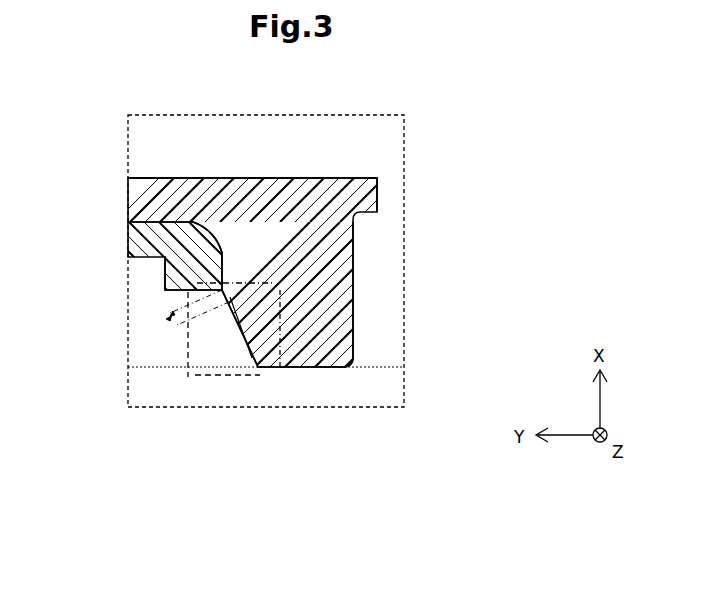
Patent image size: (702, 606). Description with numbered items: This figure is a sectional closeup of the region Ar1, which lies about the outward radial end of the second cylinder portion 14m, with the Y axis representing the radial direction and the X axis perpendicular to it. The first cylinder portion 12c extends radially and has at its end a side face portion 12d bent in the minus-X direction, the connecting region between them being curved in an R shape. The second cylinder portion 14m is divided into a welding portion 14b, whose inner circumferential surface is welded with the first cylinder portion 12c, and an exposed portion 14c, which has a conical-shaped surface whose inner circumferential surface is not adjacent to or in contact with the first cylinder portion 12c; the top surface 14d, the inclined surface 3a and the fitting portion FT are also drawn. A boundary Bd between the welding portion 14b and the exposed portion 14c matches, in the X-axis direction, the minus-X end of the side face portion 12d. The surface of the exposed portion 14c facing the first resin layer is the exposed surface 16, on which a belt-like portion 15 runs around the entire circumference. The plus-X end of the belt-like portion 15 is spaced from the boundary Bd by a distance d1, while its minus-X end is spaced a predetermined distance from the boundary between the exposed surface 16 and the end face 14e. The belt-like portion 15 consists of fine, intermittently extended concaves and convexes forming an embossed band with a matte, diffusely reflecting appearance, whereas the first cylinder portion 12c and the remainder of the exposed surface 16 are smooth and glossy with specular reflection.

The region Ar1 is at (405, 160).
The second cylinder portion 14m is at (303, 273).
The welding portion 14b is at (176, 190).
The exposed portion 14c is at (308, 318).
The upper surface 14d is at (255, 185).
The end face 14e is at (310, 367).
The inclined surface 3a is at (248, 350).
The belt-like portion 15 is at (225, 300).
The exposed surface 16 is at (223, 297).
The first cylinder portion 12c is at (130, 245).
The side face portion 12d is at (165, 276).
The distance d1 is at (184, 311).
The boundary Bd is at (222, 295).
The fitting portion FT is at (158, 398).